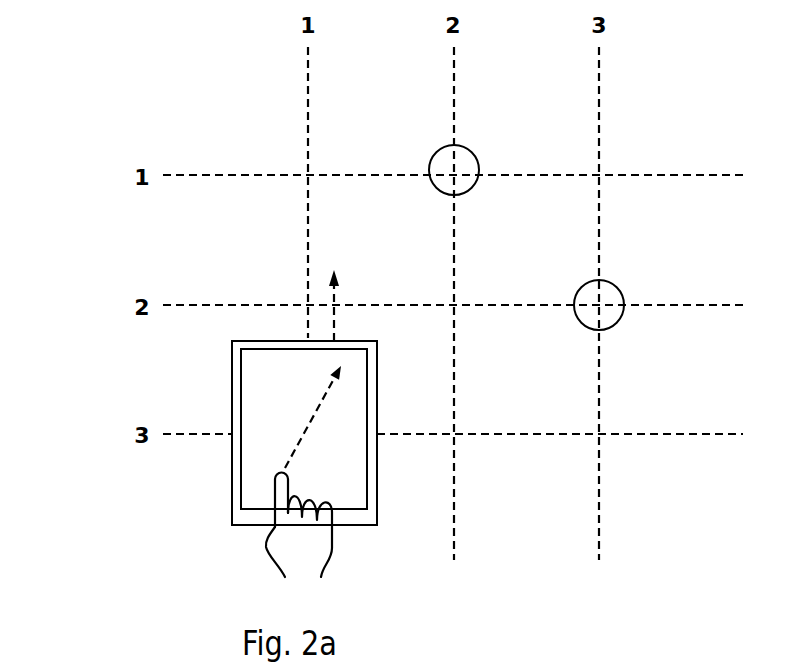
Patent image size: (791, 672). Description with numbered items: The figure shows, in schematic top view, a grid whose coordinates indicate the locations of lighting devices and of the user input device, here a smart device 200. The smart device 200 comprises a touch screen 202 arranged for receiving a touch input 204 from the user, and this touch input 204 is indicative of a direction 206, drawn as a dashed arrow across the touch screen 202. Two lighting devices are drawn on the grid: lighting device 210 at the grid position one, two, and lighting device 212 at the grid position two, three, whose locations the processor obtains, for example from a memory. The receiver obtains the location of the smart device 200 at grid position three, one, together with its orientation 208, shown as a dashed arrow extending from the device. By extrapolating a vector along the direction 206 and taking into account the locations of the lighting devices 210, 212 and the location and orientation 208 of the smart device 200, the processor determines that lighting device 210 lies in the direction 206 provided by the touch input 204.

The smart device 200 is at (377, 460).
The touch screen 202 is at (252, 488).
The touch input 204 is at (295, 543).
The direction 206 is at (313, 408).
The orientation 208 is at (335, 292).
The lighting device 210 is at (450, 170).
The lighting device 212 is at (599, 305).